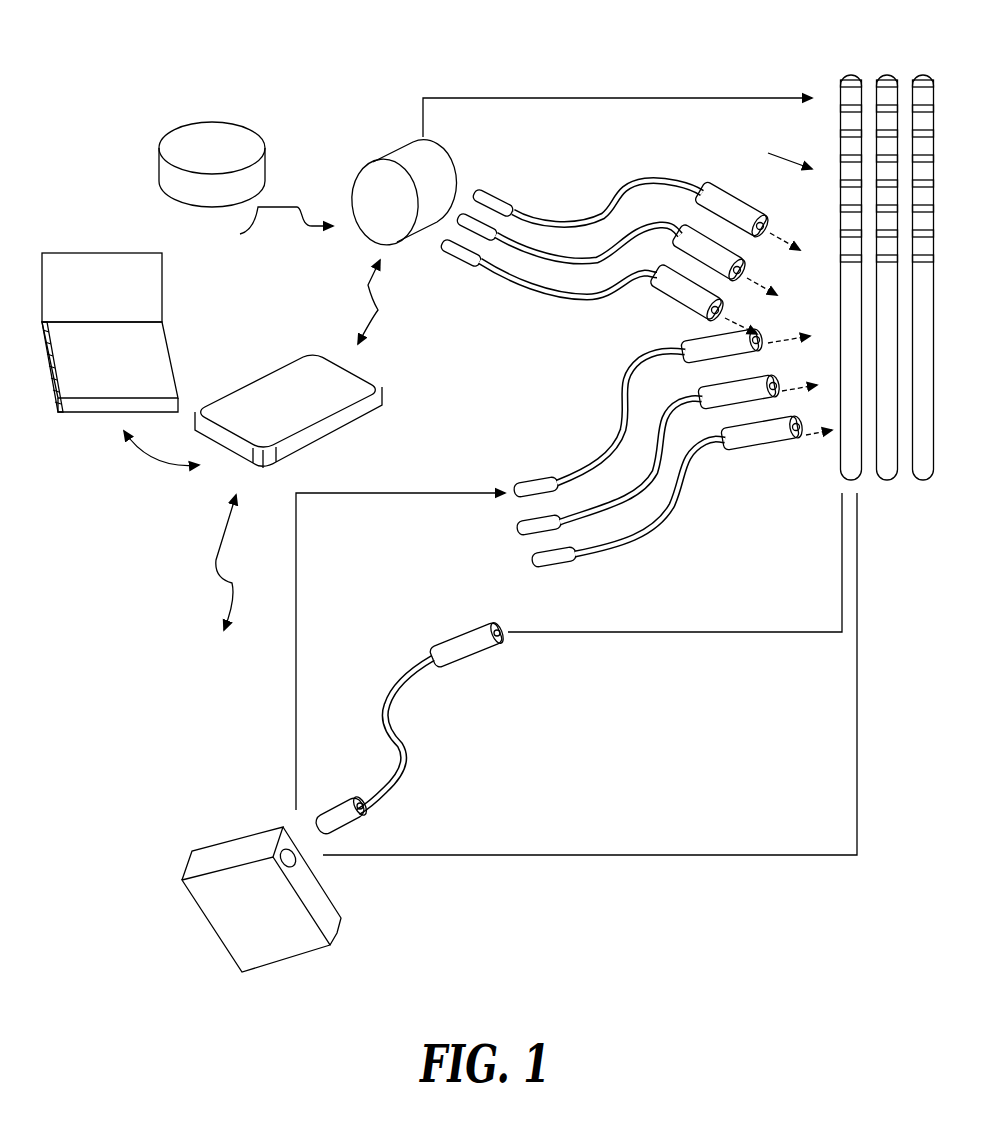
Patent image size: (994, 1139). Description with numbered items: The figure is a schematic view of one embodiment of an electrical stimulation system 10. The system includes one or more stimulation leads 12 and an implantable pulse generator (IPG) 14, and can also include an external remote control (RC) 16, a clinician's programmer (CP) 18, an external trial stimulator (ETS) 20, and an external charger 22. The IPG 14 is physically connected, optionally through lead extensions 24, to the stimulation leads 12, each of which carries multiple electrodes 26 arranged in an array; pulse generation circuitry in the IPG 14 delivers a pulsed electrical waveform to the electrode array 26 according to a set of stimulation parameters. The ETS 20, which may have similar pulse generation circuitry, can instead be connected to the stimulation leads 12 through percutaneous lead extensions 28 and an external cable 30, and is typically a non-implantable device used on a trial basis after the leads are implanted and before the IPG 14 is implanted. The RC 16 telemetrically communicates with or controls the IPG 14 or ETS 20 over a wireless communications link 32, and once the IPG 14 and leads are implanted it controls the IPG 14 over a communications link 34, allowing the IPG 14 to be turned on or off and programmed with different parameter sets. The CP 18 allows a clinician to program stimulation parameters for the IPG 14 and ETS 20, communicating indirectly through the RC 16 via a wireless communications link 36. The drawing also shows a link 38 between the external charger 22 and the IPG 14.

The electrical stimulation system 10 is at (589, 47).
The stimulation leads 12 is at (808, 248).
The implantable pulse generator (IPG) 14 is at (386, 150).
The external remote control (RC) 16 is at (300, 372).
The clinician's programmer (CP) 18 is at (88, 268).
The external trial stimulator (ETS) 20 is at (233, 855).
The external charger 22 is at (212, 130).
The lead extensions 24 is at (618, 238).
The electrodes 26 is at (841, 112).
The percutaneous lead extensions 28 is at (613, 500).
The external cable 30 is at (406, 670).
The wireless communications link 32 is at (228, 607).
The communications link 34 is at (378, 312).
The wireless communications link 36 is at (152, 458).
The charger-IPG inductive link 38 is at (272, 227).